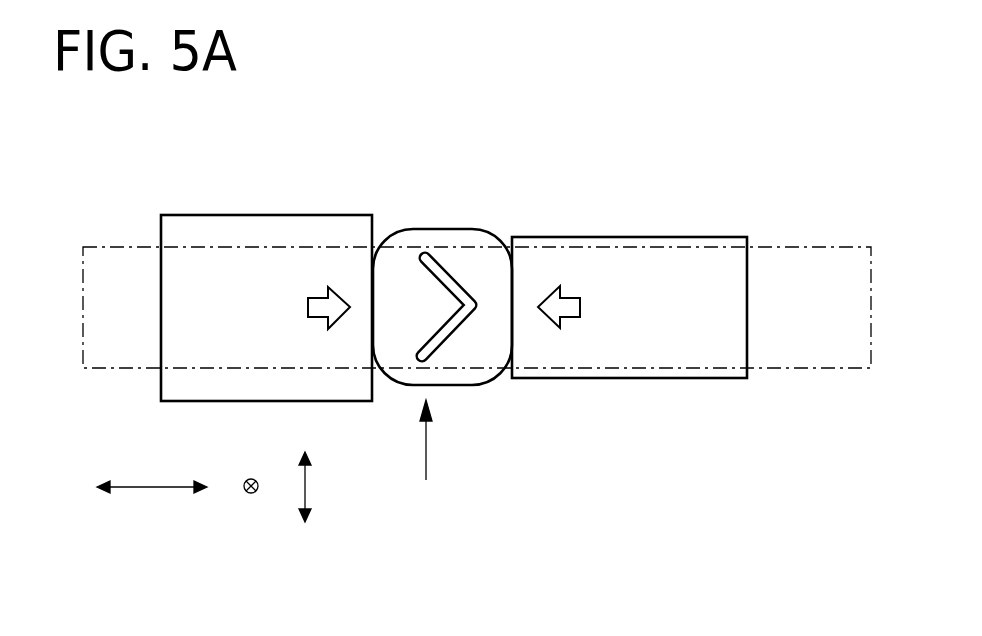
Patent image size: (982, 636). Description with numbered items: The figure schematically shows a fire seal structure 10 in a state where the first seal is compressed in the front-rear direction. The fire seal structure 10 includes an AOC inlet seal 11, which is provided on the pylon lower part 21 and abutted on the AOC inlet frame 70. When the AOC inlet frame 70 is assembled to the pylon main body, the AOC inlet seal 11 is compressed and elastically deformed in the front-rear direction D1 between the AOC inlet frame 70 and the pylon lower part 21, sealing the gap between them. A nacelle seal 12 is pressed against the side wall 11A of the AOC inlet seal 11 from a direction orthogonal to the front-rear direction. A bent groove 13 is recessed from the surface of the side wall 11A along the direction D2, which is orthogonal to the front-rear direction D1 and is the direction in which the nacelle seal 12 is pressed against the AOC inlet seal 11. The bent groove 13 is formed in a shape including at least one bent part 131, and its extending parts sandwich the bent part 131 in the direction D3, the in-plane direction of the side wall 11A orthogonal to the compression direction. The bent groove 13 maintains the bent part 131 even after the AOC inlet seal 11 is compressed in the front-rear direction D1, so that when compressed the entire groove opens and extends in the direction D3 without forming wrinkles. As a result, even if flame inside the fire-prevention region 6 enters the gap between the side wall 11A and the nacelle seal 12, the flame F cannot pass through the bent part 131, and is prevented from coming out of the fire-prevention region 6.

The AOC inlet frame 70 is at (195, 215).
The pylon lower part 21 is at (662, 235).
The fire seal structure 10 is at (494, 230).
The AOC inlet seal 11 is at (468, 229).
The side wall 11A is at (425, 232).
The nacelle seal 12 is at (397, 227).
The bent groove 13 is at (447, 290).
The bent part 131 is at (477, 311).
The fire-prevention region 6 is at (568, 507).
The front-rear direction D1 is at (152, 466).
The direction orthogonal to the front-rear direction D2 is at (250, 466).
The in-plane direction orthogonal to the compression direction D3 is at (324, 487).
The flame F is at (425, 459).